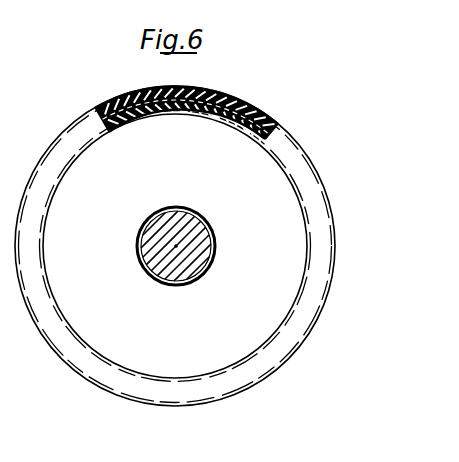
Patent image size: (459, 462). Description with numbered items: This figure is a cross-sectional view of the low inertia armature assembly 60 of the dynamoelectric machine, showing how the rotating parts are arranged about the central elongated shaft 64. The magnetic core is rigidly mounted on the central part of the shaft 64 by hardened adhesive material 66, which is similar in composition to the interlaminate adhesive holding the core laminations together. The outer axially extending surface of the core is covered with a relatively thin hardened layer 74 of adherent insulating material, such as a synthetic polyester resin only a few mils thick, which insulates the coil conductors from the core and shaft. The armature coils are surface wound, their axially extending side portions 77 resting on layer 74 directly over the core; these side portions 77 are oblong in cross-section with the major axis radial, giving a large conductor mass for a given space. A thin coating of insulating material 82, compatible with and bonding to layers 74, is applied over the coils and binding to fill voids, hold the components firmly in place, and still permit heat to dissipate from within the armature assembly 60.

The armature assembly 60 is at (336, 241).
The shaft 64 is at (205, 242).
The adhesive material 66 is at (186, 210).
The layers of insulating material 74 is at (140, 121).
The side portions 77 is at (259, 108).
The insulating material 82 is at (198, 89).